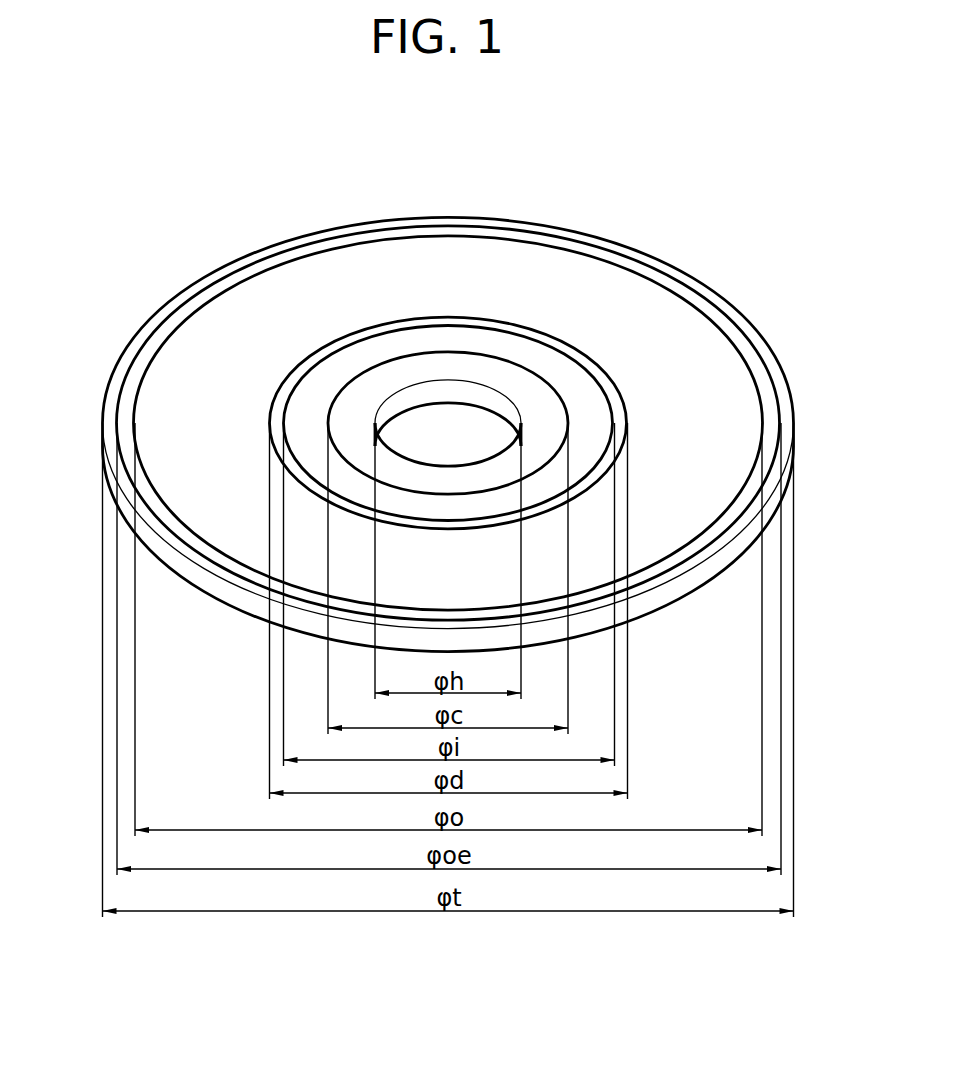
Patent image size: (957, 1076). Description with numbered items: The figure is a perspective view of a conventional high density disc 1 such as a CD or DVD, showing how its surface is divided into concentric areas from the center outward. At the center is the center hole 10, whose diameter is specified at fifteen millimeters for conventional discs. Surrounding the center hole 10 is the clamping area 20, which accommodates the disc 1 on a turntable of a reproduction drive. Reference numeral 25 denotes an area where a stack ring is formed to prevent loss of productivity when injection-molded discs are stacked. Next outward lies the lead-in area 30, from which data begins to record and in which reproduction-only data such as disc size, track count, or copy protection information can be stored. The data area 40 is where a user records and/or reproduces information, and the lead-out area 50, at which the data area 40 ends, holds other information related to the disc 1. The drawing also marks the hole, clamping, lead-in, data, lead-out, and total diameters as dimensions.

The disc 1 is at (138, 292).
The center hole 10 is at (455, 385).
The clamping area 20 is at (514, 378).
The stack ring area 25 is at (545, 365).
The lead-in area 30 is at (587, 357).
The data area 40 is at (698, 331).
The lead-out area 50 is at (766, 386).